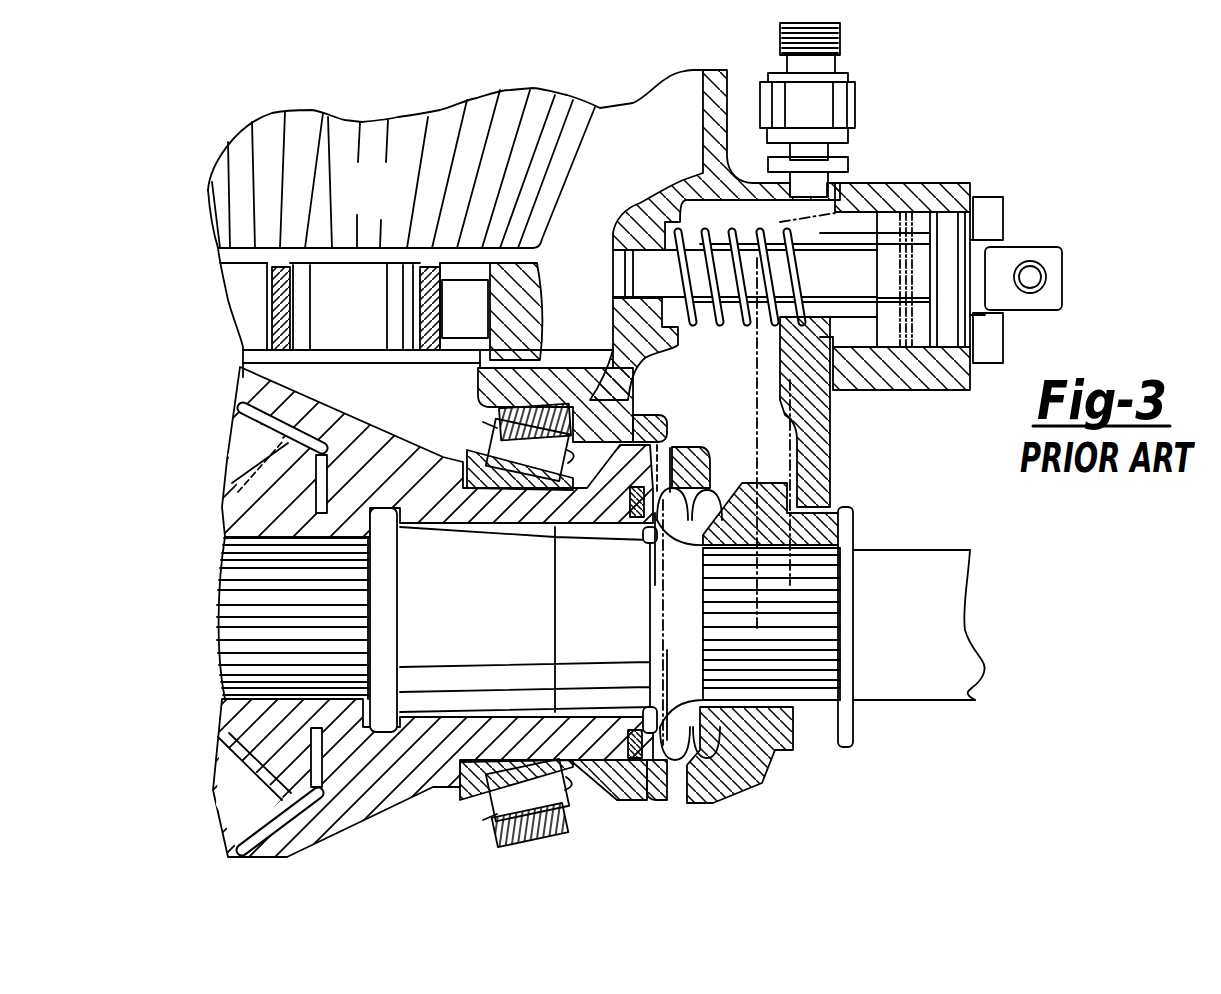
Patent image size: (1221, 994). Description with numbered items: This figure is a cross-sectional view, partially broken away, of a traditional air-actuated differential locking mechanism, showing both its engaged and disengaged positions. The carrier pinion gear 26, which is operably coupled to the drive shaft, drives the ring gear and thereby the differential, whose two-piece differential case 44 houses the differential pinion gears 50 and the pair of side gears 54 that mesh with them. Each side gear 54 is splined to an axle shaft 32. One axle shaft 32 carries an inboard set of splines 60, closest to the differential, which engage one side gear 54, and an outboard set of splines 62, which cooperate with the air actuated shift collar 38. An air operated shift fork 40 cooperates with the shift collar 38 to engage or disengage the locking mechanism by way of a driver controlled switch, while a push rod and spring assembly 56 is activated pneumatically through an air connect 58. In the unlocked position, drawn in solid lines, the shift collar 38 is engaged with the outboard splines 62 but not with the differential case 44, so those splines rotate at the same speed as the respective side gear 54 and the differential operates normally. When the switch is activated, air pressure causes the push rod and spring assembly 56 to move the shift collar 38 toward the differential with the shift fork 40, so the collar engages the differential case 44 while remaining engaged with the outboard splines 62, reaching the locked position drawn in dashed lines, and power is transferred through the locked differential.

The pinion gear 26 is at (392, 198).
The axle shaft 32 is at (934, 678).
The shift collar 38 is at (727, 765).
The shift fork 40 is at (833, 450).
The differential case 44 is at (668, 428).
The differential pinion gear 50 is at (235, 459).
The side gear 54 is at (290, 760).
The push rod and spring assembly 56 is at (717, 212).
The air connect 58 is at (952, 250).
The inboard set of splines 60 is at (270, 538).
The outboard set of splines 62 is at (743, 710).